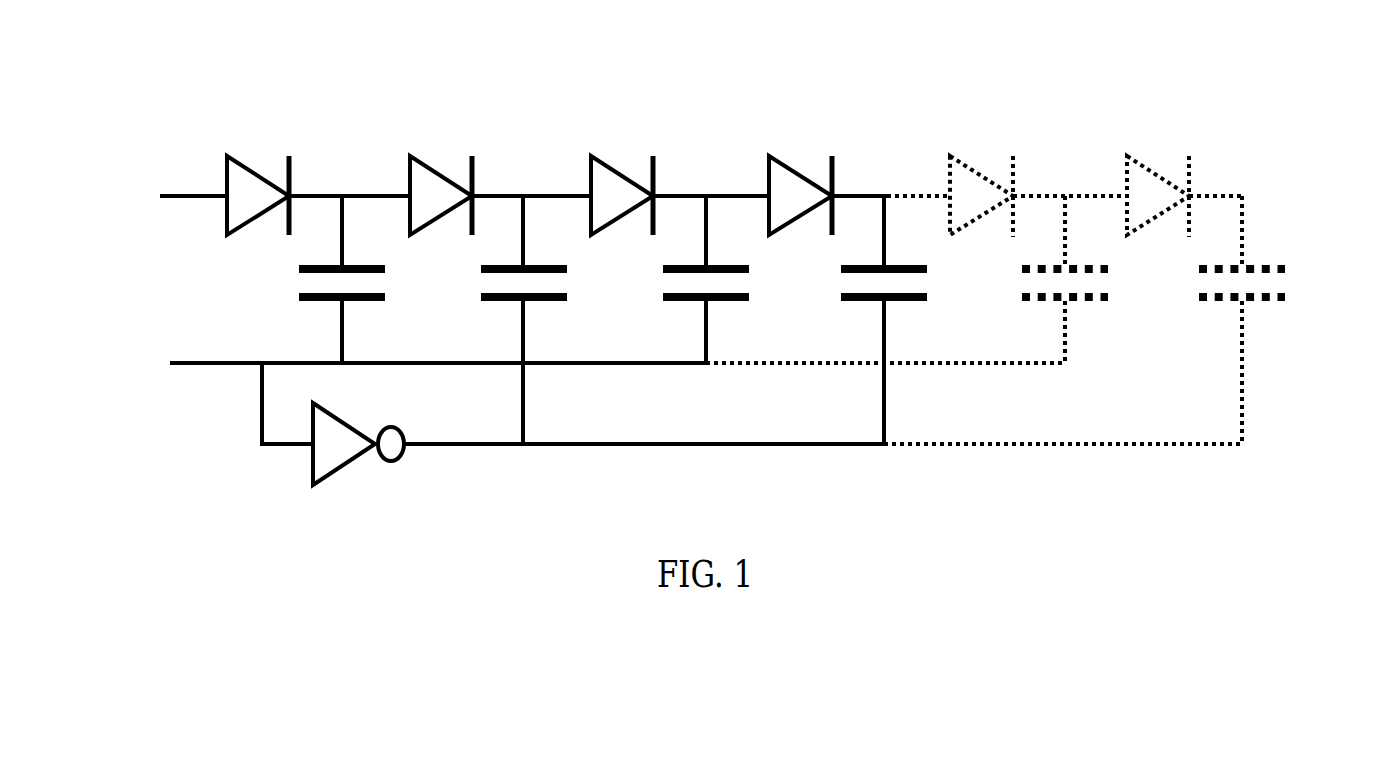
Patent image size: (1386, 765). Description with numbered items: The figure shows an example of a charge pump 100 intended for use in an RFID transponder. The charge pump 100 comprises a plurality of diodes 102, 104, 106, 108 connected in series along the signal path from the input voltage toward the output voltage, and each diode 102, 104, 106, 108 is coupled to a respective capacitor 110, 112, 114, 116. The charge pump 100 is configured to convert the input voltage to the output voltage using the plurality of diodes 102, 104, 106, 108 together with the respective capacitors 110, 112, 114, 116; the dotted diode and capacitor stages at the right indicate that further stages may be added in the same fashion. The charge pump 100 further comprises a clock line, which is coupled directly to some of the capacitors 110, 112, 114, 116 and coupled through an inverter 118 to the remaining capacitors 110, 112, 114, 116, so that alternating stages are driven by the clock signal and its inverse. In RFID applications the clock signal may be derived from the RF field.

The charge pump 100 is at (370, 88).
The diode 102 is at (248, 168).
The diode 104 is at (435, 170).
The diode 106 is at (612, 172).
The diode 108 is at (798, 170).
The capacitor 110 is at (355, 302).
The capacitor 112 is at (540, 300).
The capacitor 114 is at (718, 300).
The capacitor 116 is at (903, 300).
The inverter 118 is at (345, 468).